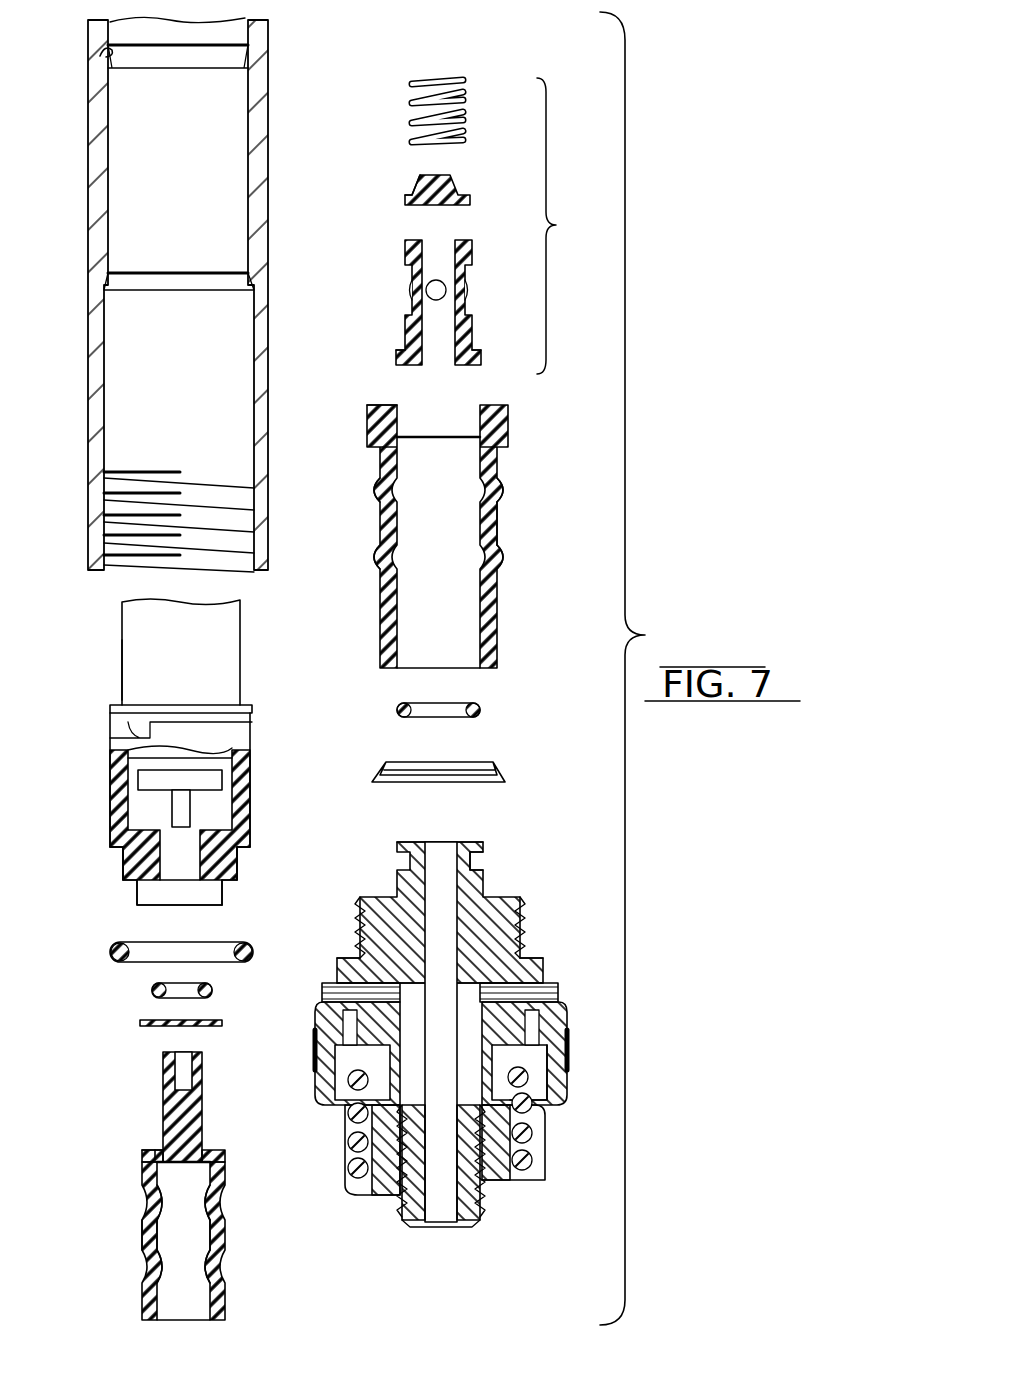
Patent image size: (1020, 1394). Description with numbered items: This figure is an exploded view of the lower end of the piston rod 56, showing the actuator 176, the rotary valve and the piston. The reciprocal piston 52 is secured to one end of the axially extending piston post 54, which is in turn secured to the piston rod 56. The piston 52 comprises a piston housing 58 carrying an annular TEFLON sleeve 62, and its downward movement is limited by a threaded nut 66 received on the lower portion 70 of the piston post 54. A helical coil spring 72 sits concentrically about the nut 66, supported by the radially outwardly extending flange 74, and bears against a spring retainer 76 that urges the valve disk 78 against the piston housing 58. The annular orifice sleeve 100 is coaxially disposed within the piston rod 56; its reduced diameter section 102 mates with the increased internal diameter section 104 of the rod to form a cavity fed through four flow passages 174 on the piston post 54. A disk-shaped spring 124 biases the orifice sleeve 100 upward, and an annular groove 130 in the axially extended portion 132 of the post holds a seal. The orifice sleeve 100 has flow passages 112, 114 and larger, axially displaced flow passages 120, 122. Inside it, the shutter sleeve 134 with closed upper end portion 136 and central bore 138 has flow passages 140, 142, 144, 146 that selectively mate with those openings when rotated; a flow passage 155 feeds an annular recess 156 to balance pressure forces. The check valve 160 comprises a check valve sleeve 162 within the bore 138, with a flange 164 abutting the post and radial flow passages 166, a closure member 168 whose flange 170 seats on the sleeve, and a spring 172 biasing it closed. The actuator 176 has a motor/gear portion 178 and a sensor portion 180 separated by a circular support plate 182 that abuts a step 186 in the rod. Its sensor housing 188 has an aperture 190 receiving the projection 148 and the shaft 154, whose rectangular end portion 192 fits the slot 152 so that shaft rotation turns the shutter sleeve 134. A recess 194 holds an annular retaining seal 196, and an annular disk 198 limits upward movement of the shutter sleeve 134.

The piston rod 56 is at (98, 200).
The increased internal diameter section 104 is at (98, 340).
The step 186 is at (100, 58).
The check valve 160 is at (575, 226).
The spring 172 is at (468, 98).
The closure member 168 is at (455, 188).
The radially extending flange 170 is at (403, 197).
The check valve sleeve 162 is at (470, 326).
The flow passages 166 is at (410, 298).
The radially extending flange 164 is at (481, 360).
The orifice sleeve 100 is at (498, 458).
The flow passage 120 is at (373, 493).
The flow passage 112 is at (373, 558).
The flow passage 122 is at (505, 495).
The reduced diameter section 102 is at (503, 528).
The flow passage 114 is at (505, 561).
The disk-shaped spring 124 is at (505, 780).
The piston post 54 is at (510, 922).
The axially extended portion 132 is at (485, 842).
The annular groove 130 is at (482, 865).
The flow passages 174 is at (525, 940).
The reciprocal piston 52 is at (545, 1012).
The valve disk 78 is at (350, 1044).
The TEFLON sleeve 62 is at (568, 1045).
The spring retainer 76 is at (530, 1078).
The piston housing 58 is at (560, 1100).
The helical coil spring 72 is at (533, 1165).
The radially outwardly extending flange 74 is at (515, 1182).
The threaded nut 66 is at (490, 1200).
The lower portion 70 is at (418, 1210).
The motor/gear portion 178 is at (125, 622).
The actuator 176 is at (124, 672).
The circular support plate 182 is at (252, 708).
The sensor housing 188 is at (115, 832).
The sensor portion 180 is at (230, 780).
The shaft 154 is at (225, 808).
The rectangular end portion 192 is at (237, 862).
The aperture 190 is at (162, 897).
The recess 194 is at (215, 895).
The annular retaining seal 196 is at (150, 992).
The annular disk 198 is at (155, 1028).
The slot 152 is at (182, 1070).
The axially extending projection 148 is at (160, 1115).
The annular recess 156 is at (158, 1150).
The flow passage 155 is at (142, 1158).
The shutter sleeve 134 is at (225, 1168).
The closed upper end portion 136 is at (160, 1192).
The flow passage 146 is at (214, 1202).
The flow passage 144 is at (148, 1205).
The central bore 138 is at (190, 1240).
The flow passage 142 is at (150, 1270).
The flow passage 140 is at (218, 1272).